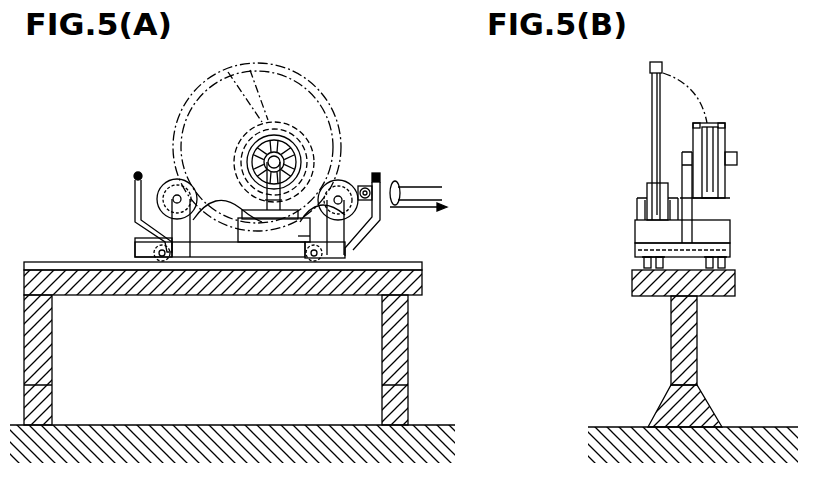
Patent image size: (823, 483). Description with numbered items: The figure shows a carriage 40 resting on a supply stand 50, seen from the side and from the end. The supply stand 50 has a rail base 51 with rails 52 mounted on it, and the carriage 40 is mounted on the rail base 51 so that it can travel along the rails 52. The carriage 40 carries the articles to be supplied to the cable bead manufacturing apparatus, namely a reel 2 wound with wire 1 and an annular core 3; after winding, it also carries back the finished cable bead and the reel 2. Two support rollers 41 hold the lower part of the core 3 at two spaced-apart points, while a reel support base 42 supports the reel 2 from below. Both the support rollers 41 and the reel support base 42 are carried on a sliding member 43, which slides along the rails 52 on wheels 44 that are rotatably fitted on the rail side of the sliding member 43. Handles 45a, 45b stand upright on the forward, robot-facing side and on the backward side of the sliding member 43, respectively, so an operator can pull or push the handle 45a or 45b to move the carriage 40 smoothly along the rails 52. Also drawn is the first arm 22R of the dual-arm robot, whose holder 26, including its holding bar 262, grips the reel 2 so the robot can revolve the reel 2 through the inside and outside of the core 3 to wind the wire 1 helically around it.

In FIG. 5A, the wire 1 is at (253, 84).
In FIG. 5A, the reel 2 is at (327, 133).
In FIG. 5A, the annular core 3 is at (312, 82).
In FIG. 5A, the carriage 40 is at (216, 150).
In FIG. 5A, the support rollers 41 is at (173, 182).
In FIG. 5B, the support rollers 41 is at (650, 186).
In FIG. 5A, the reel support base 42 is at (150, 228).
In FIG. 5B, the reel support base 42 is at (717, 217).
In FIG. 5A, the sliding member 43 is at (232, 248).
In FIG. 5B, the sliding member 43 is at (717, 243).
In FIG. 5A, the wheels 44 is at (155, 262).
In FIG. 5B, the wheels 44 is at (637, 253).
In FIG. 5A, the handle 45a is at (378, 215).
In FIG. 5A, the handle 45b is at (135, 188).
In FIG. 5A, the holder 26 is at (362, 188).
In FIG. 5A, the holding bar 262 is at (378, 185).
In FIG. 5A, the first arm 22R is at (427, 182).
In FIG. 5A, the supply stand 50 is at (278, 333).
In FIG. 5A, the rail base 51 is at (248, 282).
In FIG. 5B, the rail base 51 is at (738, 282).
In FIG. 5A, the rails 52 is at (403, 260).
In FIG. 5B, the rails 52 is at (638, 297).